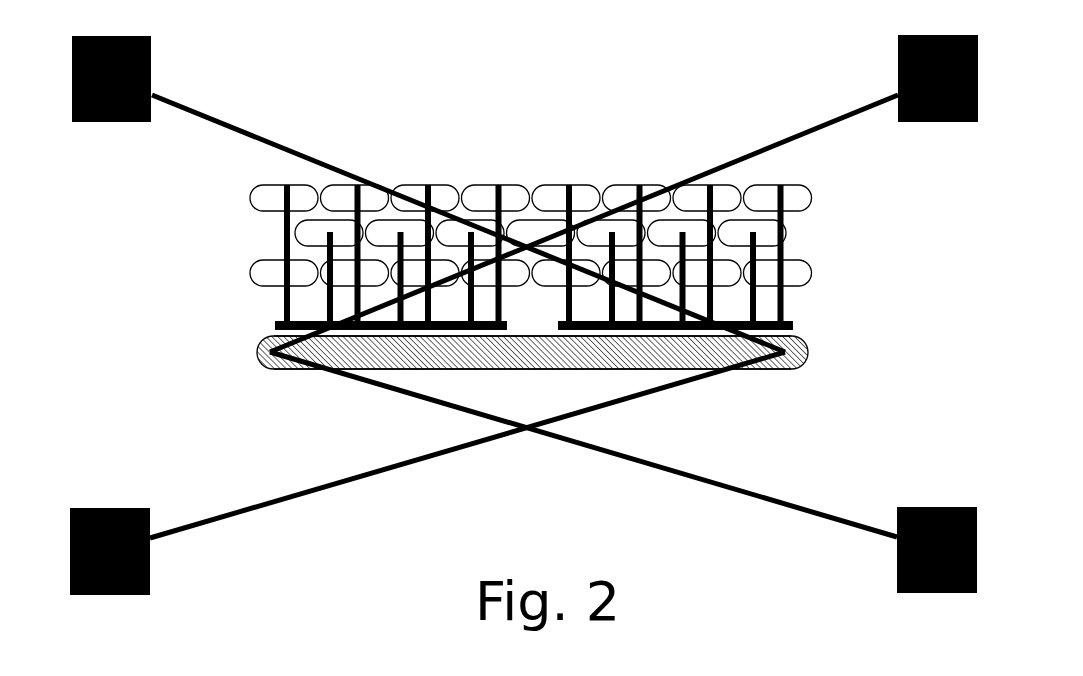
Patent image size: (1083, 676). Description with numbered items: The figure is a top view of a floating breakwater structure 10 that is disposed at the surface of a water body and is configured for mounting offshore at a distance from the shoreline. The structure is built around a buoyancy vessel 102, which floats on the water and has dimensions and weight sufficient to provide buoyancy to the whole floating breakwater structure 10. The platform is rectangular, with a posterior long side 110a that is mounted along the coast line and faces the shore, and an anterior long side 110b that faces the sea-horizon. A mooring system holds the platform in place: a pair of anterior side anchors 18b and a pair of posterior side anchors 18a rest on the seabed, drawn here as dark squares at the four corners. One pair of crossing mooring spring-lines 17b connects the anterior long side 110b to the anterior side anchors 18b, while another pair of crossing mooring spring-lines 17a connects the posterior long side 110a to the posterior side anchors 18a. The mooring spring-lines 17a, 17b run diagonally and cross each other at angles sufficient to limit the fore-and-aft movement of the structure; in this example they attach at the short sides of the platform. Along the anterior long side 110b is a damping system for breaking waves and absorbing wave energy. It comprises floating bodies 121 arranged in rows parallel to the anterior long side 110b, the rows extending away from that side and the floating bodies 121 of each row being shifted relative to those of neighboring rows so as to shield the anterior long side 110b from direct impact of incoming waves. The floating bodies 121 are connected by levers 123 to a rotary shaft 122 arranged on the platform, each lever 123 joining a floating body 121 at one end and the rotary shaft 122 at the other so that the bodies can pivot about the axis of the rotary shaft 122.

The floating breakwater structure 10 is at (391, 91).
The mooring spring-lines 17a is at (268, 502).
The mooring spring-lines 17b is at (237, 130).
The posterior side anchors 18a is at (112, 595).
The anterior side anchors 18b is at (105, 122).
The buoyancy vessel 102 is at (808, 352).
The posterior long side 110a is at (285, 369).
The anterior long side 110b is at (280, 337).
The floating bodies 121 is at (810, 270).
The rotary shaft 122 is at (593, 332).
The levers 123 is at (330, 311).